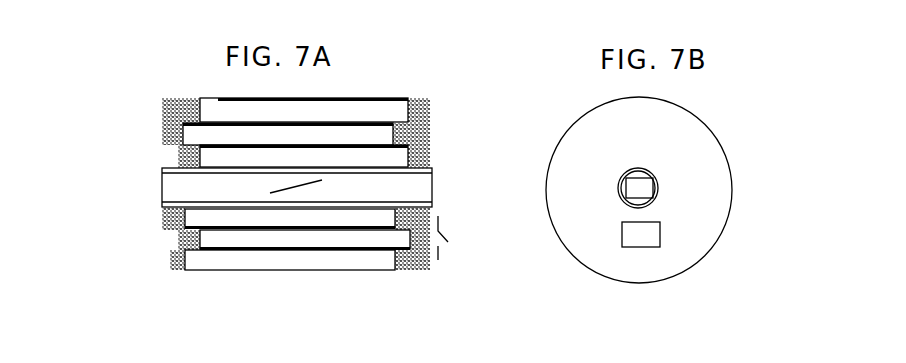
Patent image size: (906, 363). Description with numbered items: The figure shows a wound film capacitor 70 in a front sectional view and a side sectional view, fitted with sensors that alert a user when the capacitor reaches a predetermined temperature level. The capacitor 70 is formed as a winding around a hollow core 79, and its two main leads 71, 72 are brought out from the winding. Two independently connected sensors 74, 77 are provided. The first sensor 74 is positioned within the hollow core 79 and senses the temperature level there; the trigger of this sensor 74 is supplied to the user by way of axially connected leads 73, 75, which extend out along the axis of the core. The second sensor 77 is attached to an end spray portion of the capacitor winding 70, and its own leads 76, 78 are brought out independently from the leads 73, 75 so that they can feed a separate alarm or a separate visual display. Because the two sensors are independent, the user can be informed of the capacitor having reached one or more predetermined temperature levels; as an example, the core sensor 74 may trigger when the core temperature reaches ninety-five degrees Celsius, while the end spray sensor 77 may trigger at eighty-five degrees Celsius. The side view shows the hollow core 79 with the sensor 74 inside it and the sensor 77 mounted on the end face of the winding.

In FIG. 7A, the capacitor 70 is at (150, 92).
In FIG. 7B, the capacitor 70 is at (723, 143).
In FIG. 7A, the lead 71 is at (162, 133).
In FIG. 7A, the lead 72 is at (430, 133).
In FIG. 7A, the axially connected lead 73 is at (162, 193).
In FIG. 7A, the sensor 74 is at (302, 198).
In FIG. 7B, the sensor 74 is at (643, 186).
In FIG. 7A, the axially connected lead 75 is at (330, 192).
In FIG. 7A, the lead 76 is at (438, 213).
In FIG. 7A, the sensor 77 is at (452, 238).
In FIG. 7B, the sensor 77 is at (637, 237).
In FIG. 7A, the lead 78 is at (438, 264).
In FIG. 7A, the hollow core 79 is at (160, 182).
In FIG. 7B, the hollow core 79 is at (637, 168).